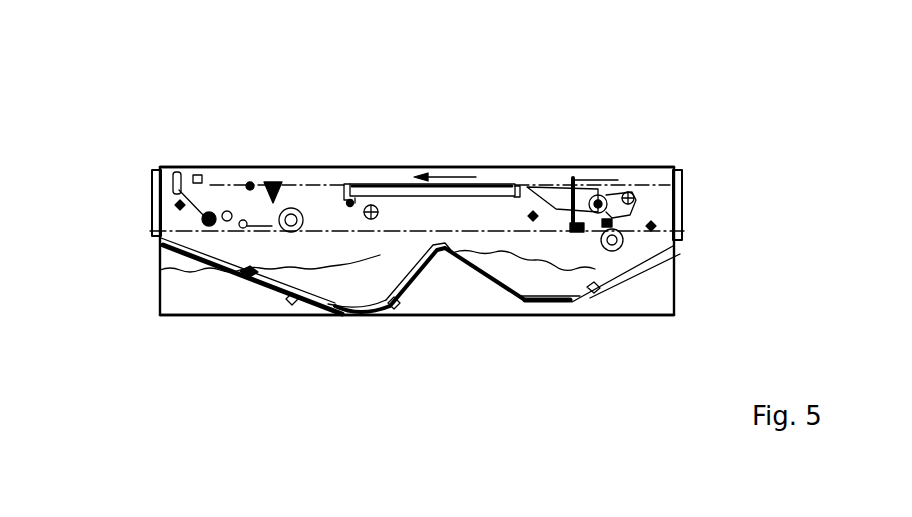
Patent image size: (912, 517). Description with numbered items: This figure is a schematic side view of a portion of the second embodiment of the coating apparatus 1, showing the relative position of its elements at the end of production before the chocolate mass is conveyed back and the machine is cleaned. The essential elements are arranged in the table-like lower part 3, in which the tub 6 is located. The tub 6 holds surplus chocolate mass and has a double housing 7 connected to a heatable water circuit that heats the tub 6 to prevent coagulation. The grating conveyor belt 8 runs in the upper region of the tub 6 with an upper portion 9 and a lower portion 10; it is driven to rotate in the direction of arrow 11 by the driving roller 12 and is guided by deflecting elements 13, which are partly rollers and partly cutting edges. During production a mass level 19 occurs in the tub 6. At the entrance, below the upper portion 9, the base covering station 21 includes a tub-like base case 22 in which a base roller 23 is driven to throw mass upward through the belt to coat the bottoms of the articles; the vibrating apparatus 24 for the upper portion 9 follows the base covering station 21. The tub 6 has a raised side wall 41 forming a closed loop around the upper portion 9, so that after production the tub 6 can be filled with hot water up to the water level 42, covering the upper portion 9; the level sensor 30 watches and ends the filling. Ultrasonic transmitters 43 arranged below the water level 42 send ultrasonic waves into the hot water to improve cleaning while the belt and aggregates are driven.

The coating apparatus 1 is at (321, 93).
The lower part 3 is at (205, 333).
The tub 6 is at (341, 300).
The double housing 7 is at (263, 300).
The grating conveyor belt 8 is at (405, 240).
The upper portion 9 is at (526, 180).
The lower portion 10 is at (487, 235).
The arrow 11 is at (449, 172).
The driving roller 12 is at (165, 237).
The deflecting elements 13 is at (165, 188).
The mass level 19 is at (247, 272).
The base covering station 21 is at (609, 160).
The base case 22 is at (556, 178).
The base roller 23 is at (603, 206).
The vibrating apparatus 24 is at (501, 180).
The level sensor 30 is at (197, 174).
The side wall 41 is at (160, 218).
The water level 42 is at (326, 180).
The ultrasonic transmitter 43 is at (291, 230).